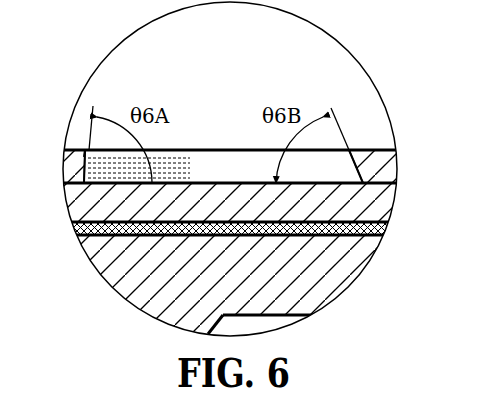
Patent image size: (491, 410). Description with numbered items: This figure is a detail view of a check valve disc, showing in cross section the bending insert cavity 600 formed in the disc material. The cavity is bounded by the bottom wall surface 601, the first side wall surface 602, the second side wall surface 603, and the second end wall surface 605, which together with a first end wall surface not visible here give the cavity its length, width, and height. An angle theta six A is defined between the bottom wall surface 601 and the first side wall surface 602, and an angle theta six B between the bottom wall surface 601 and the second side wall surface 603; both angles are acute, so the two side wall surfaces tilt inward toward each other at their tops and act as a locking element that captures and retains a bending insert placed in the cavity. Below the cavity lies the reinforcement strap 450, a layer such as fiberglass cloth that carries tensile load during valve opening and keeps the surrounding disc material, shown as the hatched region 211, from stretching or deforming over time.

The substrate 211 is at (458, 137).
The reinforcement strap 450 is at (172, 236).
The bending insert cavity 600 is at (203, 182).
The bottom wall surface 601 is at (175, 181).
The first side wall surface 602 is at (86, 153).
The second side wall surface 603 is at (358, 173).
The second end wall surface 605 is at (230, 167).